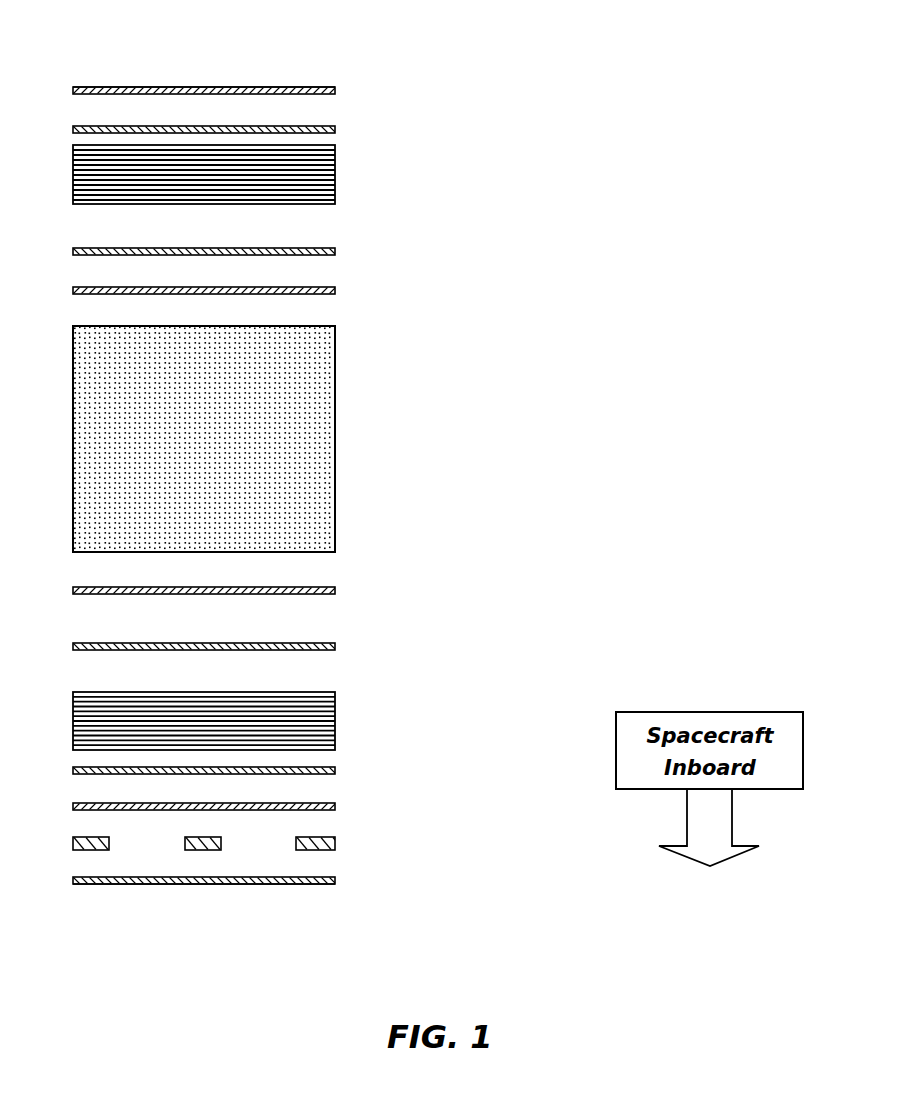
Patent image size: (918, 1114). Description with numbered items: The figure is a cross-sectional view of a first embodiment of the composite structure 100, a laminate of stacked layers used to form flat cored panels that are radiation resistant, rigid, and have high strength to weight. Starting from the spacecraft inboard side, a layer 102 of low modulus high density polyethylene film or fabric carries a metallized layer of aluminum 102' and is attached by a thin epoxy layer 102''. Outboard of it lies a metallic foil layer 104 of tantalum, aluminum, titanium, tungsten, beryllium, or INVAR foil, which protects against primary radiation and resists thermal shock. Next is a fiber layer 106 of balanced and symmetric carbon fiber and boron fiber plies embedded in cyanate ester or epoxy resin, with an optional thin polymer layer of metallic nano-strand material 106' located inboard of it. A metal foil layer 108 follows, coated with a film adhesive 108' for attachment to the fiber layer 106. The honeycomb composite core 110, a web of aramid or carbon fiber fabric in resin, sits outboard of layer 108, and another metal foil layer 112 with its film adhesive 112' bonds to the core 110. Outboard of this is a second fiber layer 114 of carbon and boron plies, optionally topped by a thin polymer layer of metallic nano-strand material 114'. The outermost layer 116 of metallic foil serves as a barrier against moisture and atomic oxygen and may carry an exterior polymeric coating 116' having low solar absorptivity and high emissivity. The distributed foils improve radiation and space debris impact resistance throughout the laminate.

The composite structure 100 is at (555, 78).
The layer of low modulus high density polyethylene 102 is at (265, 867).
The metallized layer of aluminum 102' is at (259, 912).
The thin epoxy layer 102'' is at (269, 831).
The metallic foil layer 104 is at (335, 806).
The fiber layer 106 is at (257, 714).
The thin polymer layer of metallic nano-strand material 106' is at (260, 753).
The metal foil layer 108 is at (257, 631).
The film adhesive 108' is at (259, 573).
The honeycomb composite core 110 is at (335, 440).
The metal foil layer 112 is at (253, 234).
The film adhesive 112' is at (256, 278).
The fiber layer 114 is at (253, 171).
The thin polymer layer of metallic nano-strand material 114' is at (256, 118).
The layer of metallic foil 116 is at (253, 79).
The exterior polymeric coating 116' is at (205, 53).